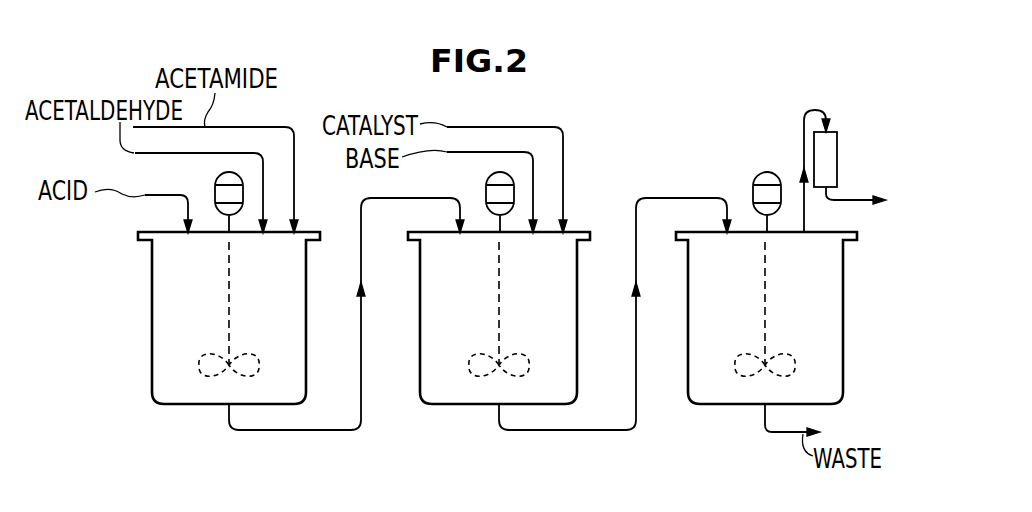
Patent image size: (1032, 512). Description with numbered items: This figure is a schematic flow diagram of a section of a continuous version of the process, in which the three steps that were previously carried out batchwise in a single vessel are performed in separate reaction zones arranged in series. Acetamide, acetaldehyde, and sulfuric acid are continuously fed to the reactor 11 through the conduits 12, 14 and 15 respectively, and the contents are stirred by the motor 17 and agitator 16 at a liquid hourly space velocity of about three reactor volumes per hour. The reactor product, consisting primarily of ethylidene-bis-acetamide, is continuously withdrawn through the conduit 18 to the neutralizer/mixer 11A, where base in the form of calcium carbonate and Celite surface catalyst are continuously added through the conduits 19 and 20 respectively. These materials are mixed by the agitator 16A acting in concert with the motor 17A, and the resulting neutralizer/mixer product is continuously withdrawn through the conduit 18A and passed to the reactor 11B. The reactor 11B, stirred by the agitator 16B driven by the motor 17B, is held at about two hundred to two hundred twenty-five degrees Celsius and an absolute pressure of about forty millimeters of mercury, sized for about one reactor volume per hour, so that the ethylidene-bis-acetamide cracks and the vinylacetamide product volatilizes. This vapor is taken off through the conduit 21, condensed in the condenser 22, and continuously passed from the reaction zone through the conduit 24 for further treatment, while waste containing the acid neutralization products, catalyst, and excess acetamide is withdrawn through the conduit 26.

The reactor 11 is at (152, 292).
The neutralizer/mixer 11A is at (420, 328).
The reactor 11B is at (688, 328).
The conduit 12 is at (249, 127).
The conduit 14 is at (247, 153).
The conduit 15 is at (158, 196).
The agitator 16 is at (243, 352).
The agitator 16A is at (517, 352).
The agitator 16B is at (778, 352).
The motor 17 is at (215, 185).
The motor 17A is at (486, 185).
The motor 17B is at (768, 172).
The conduit 18 is at (328, 431).
The conduit 18A is at (588, 432).
The conduit 19 is at (520, 152).
The conduit 20 is at (545, 127).
The conduit 21 is at (812, 110).
The condenser 22 is at (837, 145).
The conduit 24 is at (862, 200).
The conduit 26 is at (765, 437).